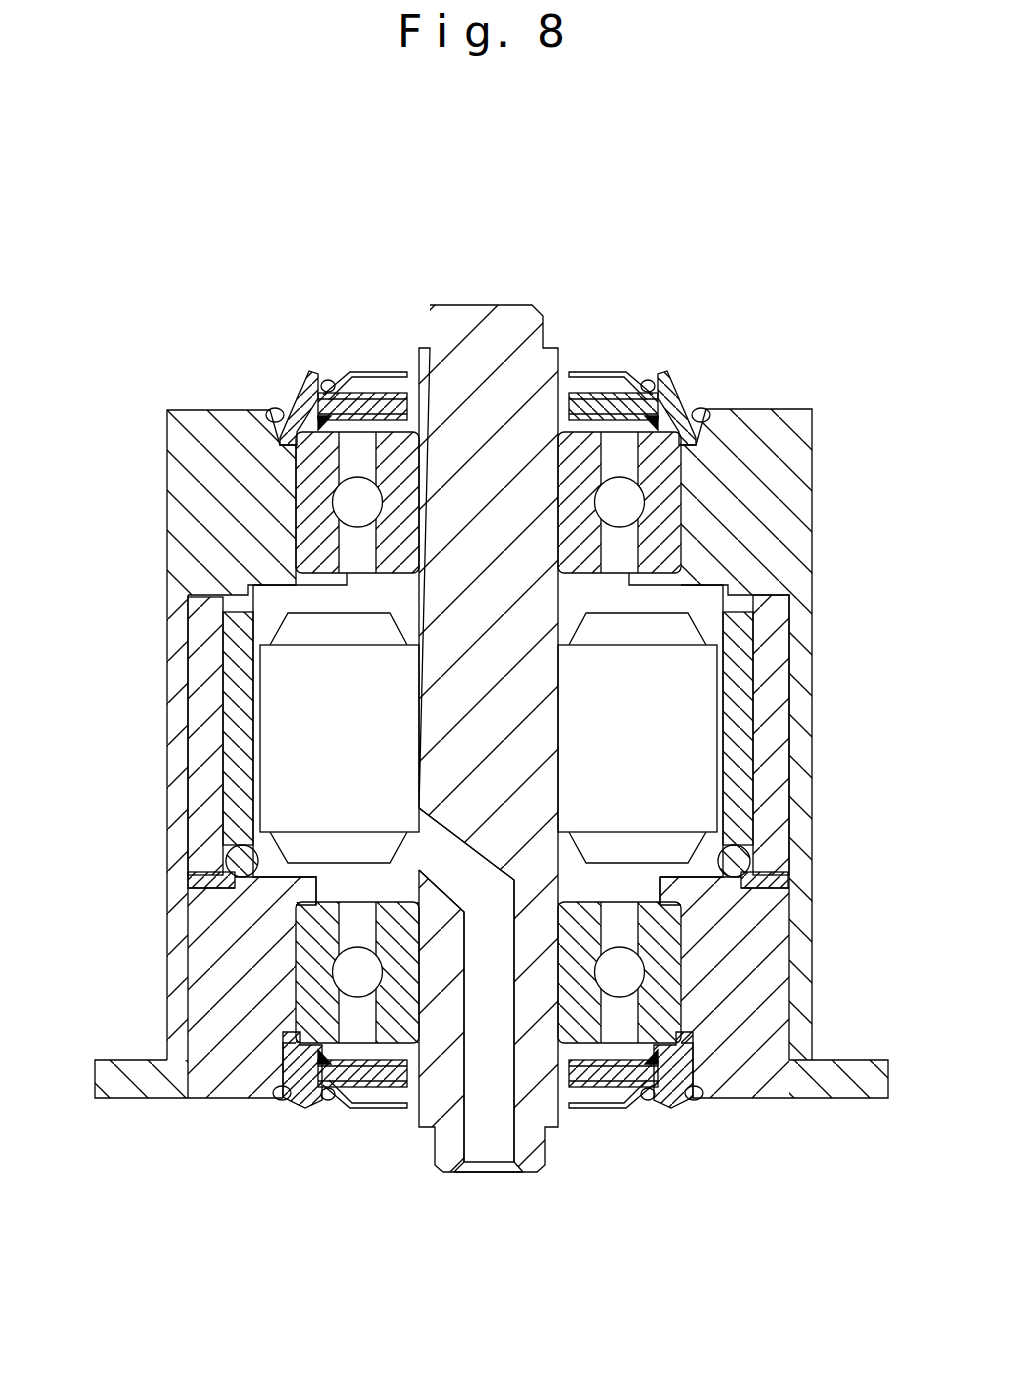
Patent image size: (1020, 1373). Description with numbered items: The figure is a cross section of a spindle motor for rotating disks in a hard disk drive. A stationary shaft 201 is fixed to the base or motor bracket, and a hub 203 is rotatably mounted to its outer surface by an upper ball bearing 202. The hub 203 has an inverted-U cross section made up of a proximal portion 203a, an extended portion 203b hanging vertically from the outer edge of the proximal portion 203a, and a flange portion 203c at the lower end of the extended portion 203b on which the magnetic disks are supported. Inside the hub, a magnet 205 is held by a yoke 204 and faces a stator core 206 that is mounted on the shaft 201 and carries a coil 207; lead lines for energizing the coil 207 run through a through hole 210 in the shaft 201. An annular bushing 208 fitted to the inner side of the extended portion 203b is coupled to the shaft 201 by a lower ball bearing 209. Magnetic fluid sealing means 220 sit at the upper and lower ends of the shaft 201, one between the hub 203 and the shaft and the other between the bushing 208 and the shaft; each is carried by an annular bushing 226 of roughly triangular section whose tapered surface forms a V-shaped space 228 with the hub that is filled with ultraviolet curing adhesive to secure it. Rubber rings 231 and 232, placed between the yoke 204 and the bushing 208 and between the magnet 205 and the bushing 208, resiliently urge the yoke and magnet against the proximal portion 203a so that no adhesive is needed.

The stationary shaft 201 is at (478, 305).
The upper ball bearing 202 is at (667, 483).
The hub 203 is at (165, 754).
The proximal portion 203a is at (185, 512).
The extended portion 203b is at (175, 805).
The flange portion 203c is at (130, 1068).
The yoke 204 is at (783, 722).
The magnet 205 is at (745, 825).
The stator core 206 is at (710, 787).
The coil 207 is at (690, 632).
The annular bushing 208 is at (257, 1098).
The lower ball bearing 209 is at (670, 985).
The through hole 210 is at (489, 1150).
The magnetic fluid sealing means 220 is at (597, 375).
The annular bushing 226 is at (683, 385).
The V-shaped space 228 is at (270, 397).
The rubber ring 231 is at (760, 885).
The rubber ring 232 is at (748, 868).